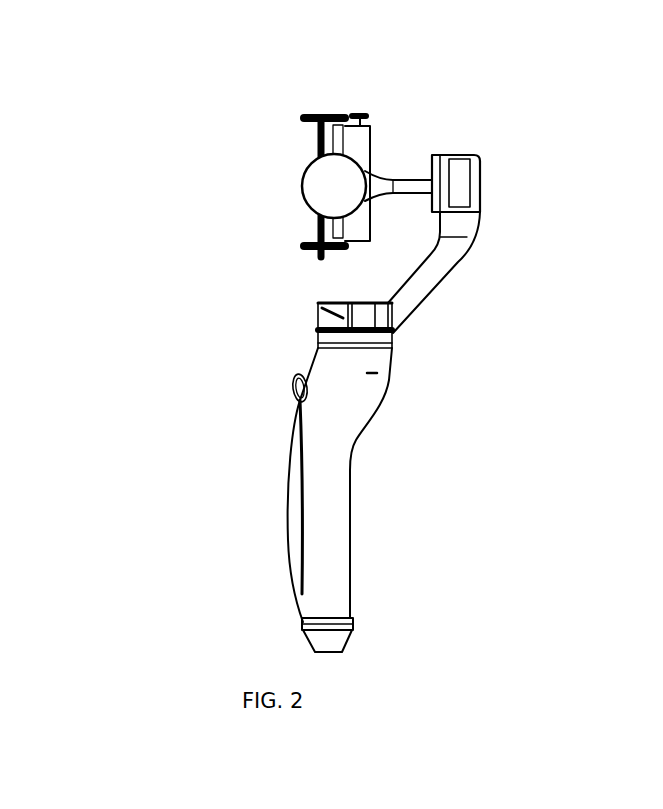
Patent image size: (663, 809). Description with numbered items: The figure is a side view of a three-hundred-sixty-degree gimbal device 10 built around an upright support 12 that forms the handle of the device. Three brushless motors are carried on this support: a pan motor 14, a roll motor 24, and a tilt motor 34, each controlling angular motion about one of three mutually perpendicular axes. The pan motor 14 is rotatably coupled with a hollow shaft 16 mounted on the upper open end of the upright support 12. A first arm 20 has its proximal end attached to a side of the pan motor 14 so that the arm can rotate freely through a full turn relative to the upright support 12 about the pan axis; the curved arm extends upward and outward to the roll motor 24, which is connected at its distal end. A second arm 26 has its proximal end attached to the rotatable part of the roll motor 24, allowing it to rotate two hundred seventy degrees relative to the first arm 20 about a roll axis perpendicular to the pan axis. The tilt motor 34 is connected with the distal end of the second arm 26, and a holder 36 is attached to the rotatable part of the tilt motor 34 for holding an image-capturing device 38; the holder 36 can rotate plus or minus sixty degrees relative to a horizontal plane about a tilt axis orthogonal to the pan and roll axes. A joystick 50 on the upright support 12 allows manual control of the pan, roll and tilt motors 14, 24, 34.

The 360-degree gimbal device 10 is at (434, 91).
The upright support 12 is at (290, 452).
The pan motor 14 is at (320, 305).
The hollow shaft 16 is at (320, 332).
The first arm 20 is at (410, 283).
The roll motor 24 is at (453, 156).
The second arm 26 is at (410, 173).
The tilt motor 34 is at (328, 178).
The holder 36 is at (302, 121).
The image-capturing device 38 is at (310, 141).
The joystick 50 is at (292, 398).